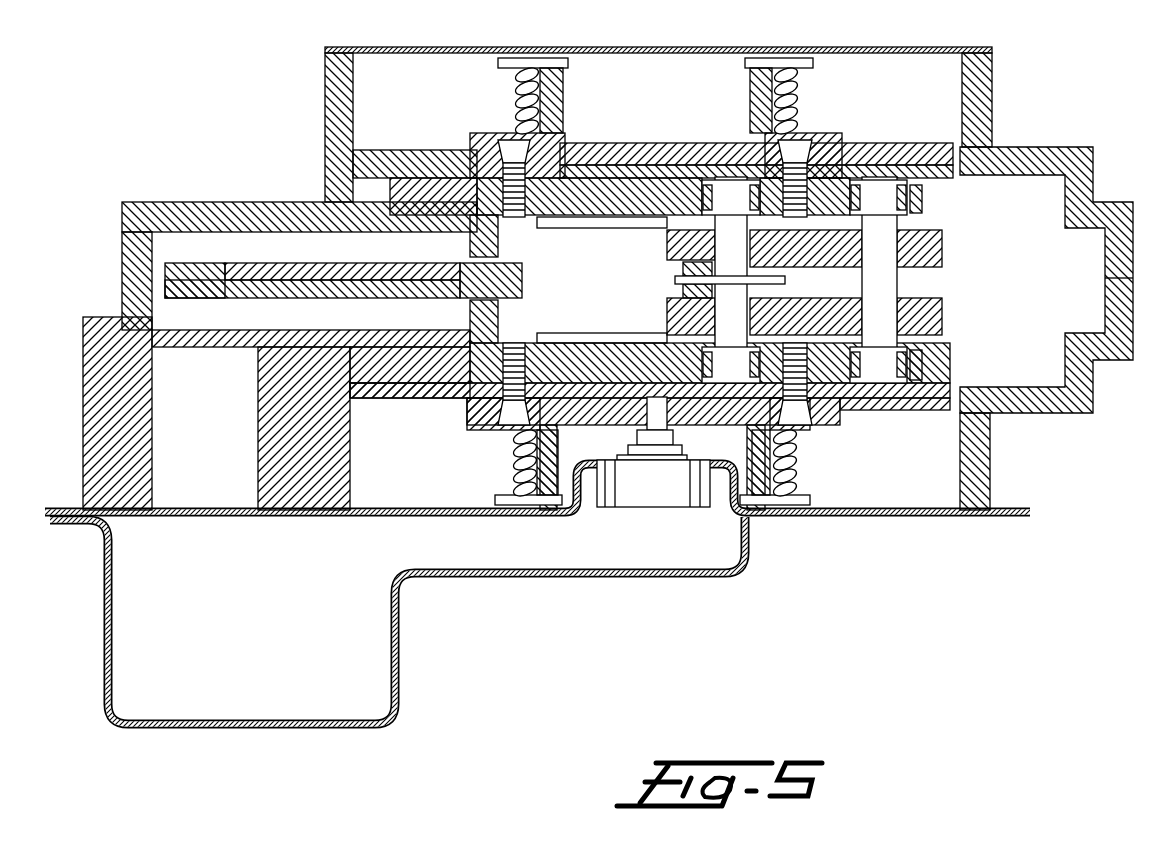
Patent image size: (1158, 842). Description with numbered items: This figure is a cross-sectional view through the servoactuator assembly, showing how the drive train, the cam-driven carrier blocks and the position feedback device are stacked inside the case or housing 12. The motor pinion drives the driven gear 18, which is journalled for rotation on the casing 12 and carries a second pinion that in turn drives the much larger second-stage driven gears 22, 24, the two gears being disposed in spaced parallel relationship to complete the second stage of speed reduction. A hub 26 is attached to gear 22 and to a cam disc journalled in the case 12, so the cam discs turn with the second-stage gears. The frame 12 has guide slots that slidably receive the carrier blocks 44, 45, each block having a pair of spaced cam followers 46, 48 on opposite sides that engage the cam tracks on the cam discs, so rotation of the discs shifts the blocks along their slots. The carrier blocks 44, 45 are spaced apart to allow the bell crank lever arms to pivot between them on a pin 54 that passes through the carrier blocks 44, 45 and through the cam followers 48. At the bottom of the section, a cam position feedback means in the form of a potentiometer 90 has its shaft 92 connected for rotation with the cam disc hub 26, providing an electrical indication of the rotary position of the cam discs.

The housing 12 is at (218, 202).
The driven gear 18 is at (185, 263).
The second-stage driven gear 22 is at (882, 413).
The second-stage driven gear 24 is at (878, 143).
The hub 26 is at (690, 425).
The carrier block 44 is at (942, 300).
The carrier block 45 is at (942, 250).
The cam follower 46 is at (922, 200).
The cam follower 48 is at (667, 228).
The pin 54 is at (675, 280).
The potentiometer 90 is at (668, 508).
The shaft 92 is at (618, 425).